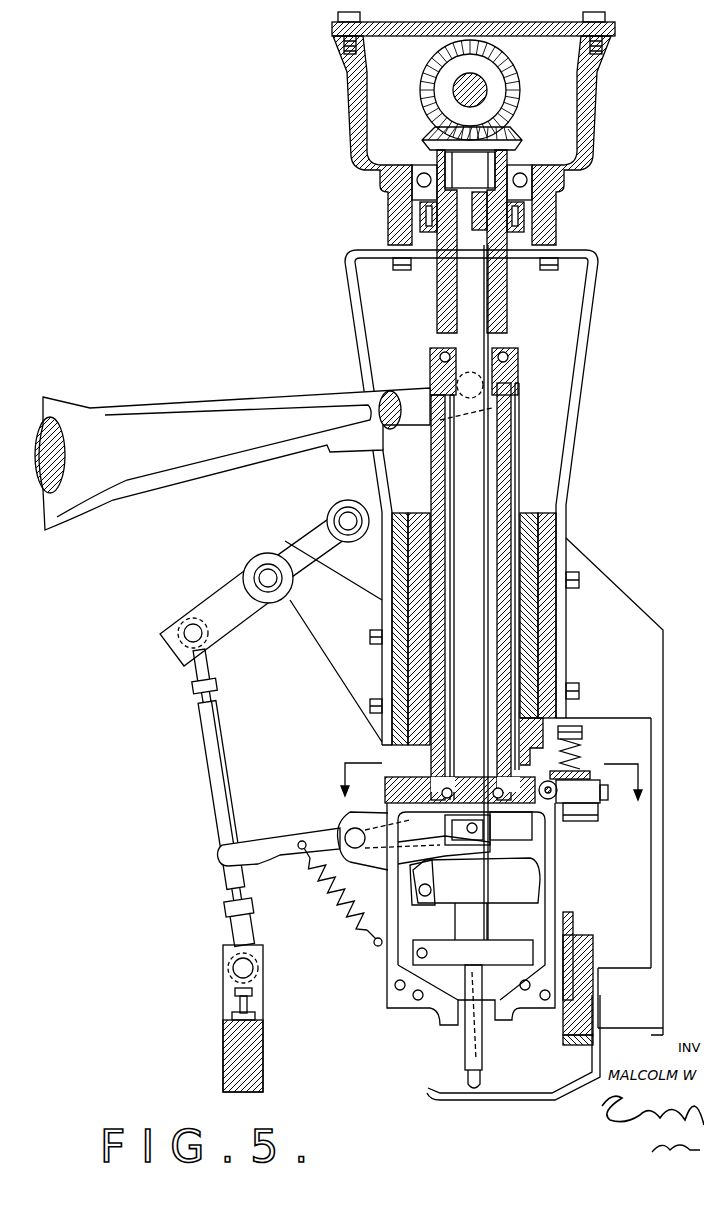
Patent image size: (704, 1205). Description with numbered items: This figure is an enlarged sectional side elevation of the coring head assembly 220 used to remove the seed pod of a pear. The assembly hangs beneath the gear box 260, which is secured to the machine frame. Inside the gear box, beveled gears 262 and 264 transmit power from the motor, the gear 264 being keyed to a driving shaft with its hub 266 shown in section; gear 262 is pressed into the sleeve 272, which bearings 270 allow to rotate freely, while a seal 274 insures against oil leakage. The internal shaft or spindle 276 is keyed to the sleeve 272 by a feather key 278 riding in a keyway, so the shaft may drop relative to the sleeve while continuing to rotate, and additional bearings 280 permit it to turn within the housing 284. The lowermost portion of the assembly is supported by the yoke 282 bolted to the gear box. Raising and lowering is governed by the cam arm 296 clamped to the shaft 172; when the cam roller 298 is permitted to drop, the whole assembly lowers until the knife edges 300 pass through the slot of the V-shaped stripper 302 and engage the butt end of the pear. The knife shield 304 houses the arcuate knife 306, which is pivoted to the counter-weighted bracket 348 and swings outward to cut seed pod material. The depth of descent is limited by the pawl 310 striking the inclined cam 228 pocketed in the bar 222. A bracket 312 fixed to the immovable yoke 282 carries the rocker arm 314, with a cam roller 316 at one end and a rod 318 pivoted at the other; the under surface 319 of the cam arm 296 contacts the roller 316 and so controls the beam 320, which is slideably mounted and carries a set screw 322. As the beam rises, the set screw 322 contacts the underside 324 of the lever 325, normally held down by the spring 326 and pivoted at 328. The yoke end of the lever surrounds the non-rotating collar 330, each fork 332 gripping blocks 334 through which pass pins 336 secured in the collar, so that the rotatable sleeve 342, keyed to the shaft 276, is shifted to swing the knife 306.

The shaft 172 is at (56, 440).
The coring head assembly 220 is at (614, 430).
The bar 222 is at (593, 962).
The cam 228 is at (574, 922).
The gear box 260 is at (350, 110).
The beveled gear 262 is at (515, 135).
The beveled gear 264 is at (520, 84).
The gear hub 266 is at (456, 84).
The bearings 270 is at (416, 180).
The sleeve 272 is at (512, 162).
The seal 274 is at (424, 216).
The internal shaft or spindle 276 is at (460, 296).
The feather key 278 is at (488, 206).
The bearings 280 is at (514, 358).
The yoke 282 is at (583, 372).
The housing 284 is at (506, 463).
The cam arm 296 is at (165, 396).
The cam roller 298 is at (514, 377).
The knife edges 300 is at (450, 1025).
The V-shaped stripper 302 is at (512, 1100).
The knife shield 304 is at (484, 1056).
The arcuate knife 306 is at (470, 1042).
The pawl 310 is at (585, 820).
The bracket 312 is at (322, 660).
The rocker arm 314 is at (230, 592).
The cam roller 316 is at (327, 514).
The rod 318 is at (207, 732).
The under surface 319 is at (350, 456).
The beam 320 is at (260, 1068).
The set screw 322 is at (236, 996).
The underside 324 is at (230, 868).
The lever 325 is at (278, 860).
The spring 326 is at (352, 920).
The pivot 328 is at (352, 832).
The collar 330 is at (530, 840).
The fork 332 is at (470, 852).
The blocks 334 is at (485, 832).
The pins 336 is at (473, 823).
The sleeve 342 is at (540, 886).
The counter-weighted bracket 348 is at (523, 964).